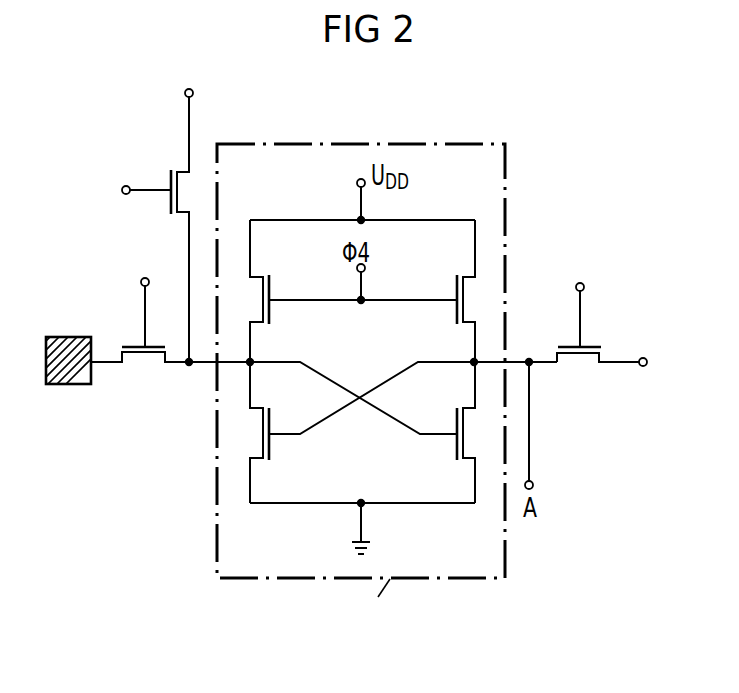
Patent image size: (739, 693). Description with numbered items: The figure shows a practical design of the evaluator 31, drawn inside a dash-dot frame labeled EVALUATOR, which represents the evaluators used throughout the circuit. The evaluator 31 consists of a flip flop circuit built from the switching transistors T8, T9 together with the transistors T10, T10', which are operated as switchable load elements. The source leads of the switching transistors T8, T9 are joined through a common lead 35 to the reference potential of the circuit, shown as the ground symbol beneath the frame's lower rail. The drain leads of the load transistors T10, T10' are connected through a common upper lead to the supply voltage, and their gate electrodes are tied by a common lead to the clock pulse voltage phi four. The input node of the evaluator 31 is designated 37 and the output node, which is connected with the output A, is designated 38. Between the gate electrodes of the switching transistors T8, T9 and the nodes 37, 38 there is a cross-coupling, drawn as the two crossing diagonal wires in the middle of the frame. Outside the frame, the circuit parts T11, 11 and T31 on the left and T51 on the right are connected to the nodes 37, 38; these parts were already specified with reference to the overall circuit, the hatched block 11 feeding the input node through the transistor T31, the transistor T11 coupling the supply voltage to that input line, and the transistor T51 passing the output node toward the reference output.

The circuit part 11 is at (64, 345).
The evaluator 31 is at (453, 578).
The common lead 35 is at (362, 513).
The input node 37 is at (262, 348).
The output node 38 is at (462, 348).
The transistor T11 is at (152, 209).
The transistor T31 is at (140, 322).
The transistor T10 is at (305, 291).
The transistor T10' is at (418, 291).
The switching transistor T8 is at (273, 432).
The switching transistor T9 is at (453, 432).
The transistor T51 is at (625, 323).